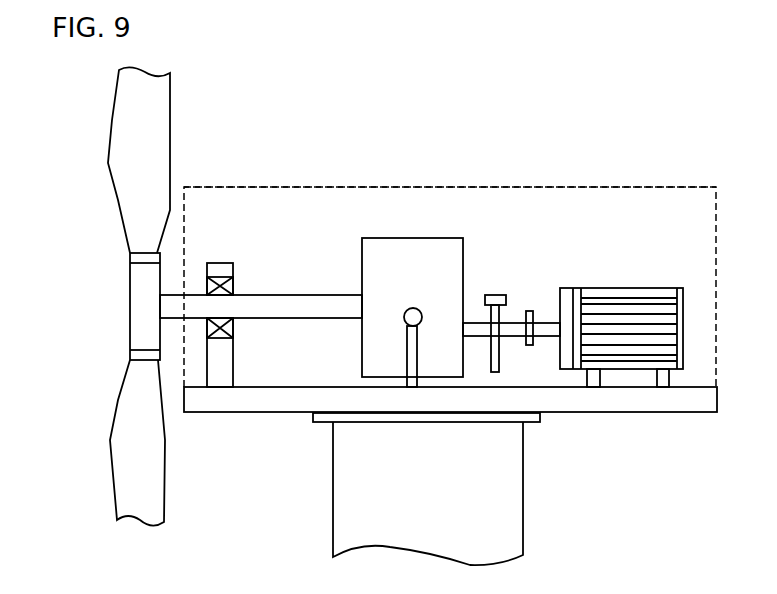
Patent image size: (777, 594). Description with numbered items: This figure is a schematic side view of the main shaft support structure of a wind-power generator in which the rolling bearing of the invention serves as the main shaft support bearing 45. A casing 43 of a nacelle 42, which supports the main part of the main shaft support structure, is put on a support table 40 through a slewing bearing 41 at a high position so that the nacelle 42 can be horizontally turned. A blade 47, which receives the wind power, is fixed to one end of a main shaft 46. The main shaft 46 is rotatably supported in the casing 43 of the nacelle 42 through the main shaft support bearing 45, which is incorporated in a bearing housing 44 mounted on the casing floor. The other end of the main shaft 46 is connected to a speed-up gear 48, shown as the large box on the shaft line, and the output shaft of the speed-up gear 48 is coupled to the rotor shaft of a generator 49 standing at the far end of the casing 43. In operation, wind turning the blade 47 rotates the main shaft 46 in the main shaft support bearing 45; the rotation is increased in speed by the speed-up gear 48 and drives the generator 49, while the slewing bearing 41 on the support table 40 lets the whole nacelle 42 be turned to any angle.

The support table 40 is at (498, 478).
The slewing bearing 41 is at (537, 421).
The nacelle 42 is at (287, 188).
The casing 43 is at (583, 187).
The bearing housing 44 is at (215, 268).
The main shaft support bearing 45 is at (233, 284).
The main shaft 46 is at (273, 320).
The blade 47 is at (128, 128).
The speed-up gear 48 is at (431, 258).
The generator 49 is at (647, 288).